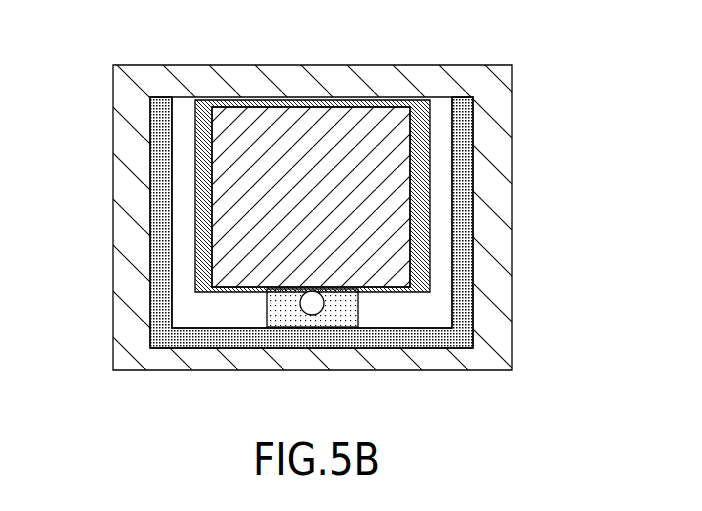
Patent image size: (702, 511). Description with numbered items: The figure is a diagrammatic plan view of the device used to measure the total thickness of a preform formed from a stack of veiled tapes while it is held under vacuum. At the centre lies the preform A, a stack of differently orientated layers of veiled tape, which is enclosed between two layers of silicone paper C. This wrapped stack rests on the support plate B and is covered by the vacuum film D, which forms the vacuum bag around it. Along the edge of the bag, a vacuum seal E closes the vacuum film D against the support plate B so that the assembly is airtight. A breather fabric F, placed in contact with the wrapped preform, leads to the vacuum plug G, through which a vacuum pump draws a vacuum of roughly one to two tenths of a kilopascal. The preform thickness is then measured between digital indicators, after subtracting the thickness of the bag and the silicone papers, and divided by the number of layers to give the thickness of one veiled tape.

The preform A is at (365, 140).
The support plate B is at (124, 296).
The silicone paper C is at (196, 157).
The vacuum film D is at (183, 213).
The vacuum seal E is at (467, 208).
The breather fabric F is at (282, 312).
The vacuum plug G is at (312, 303).